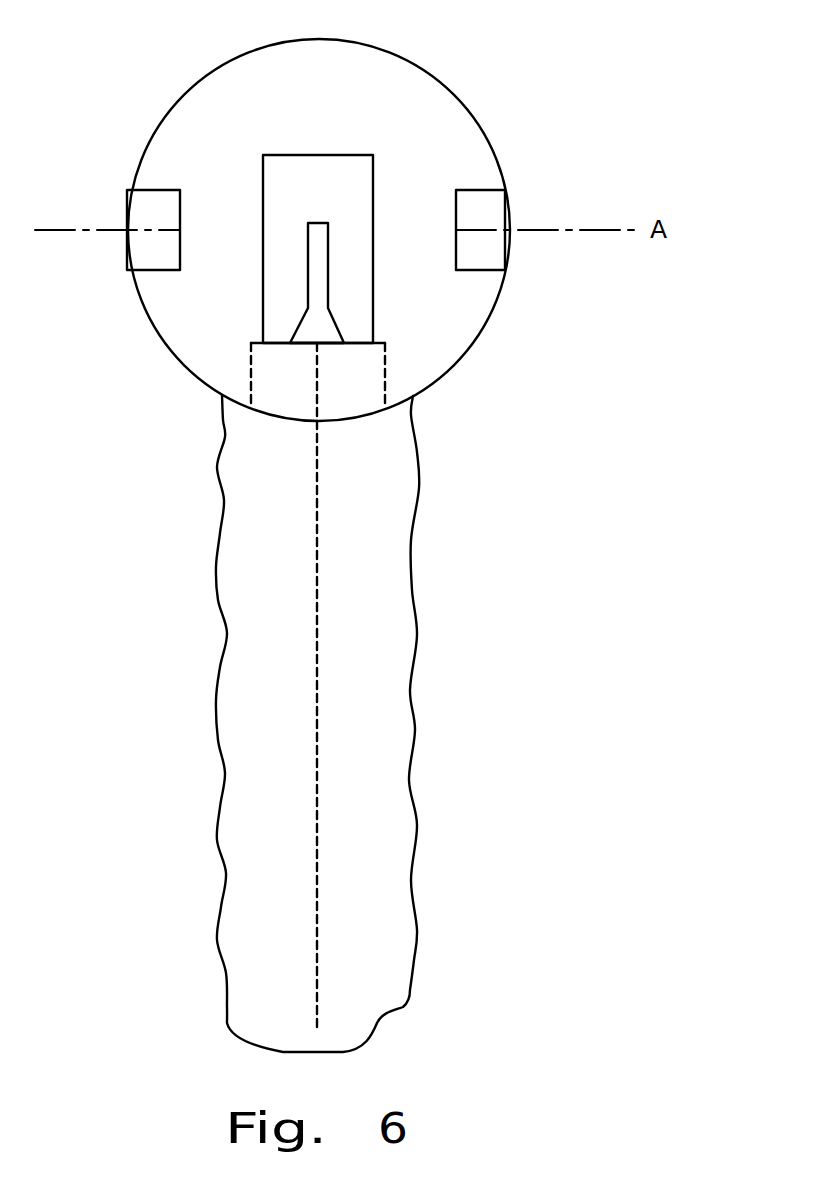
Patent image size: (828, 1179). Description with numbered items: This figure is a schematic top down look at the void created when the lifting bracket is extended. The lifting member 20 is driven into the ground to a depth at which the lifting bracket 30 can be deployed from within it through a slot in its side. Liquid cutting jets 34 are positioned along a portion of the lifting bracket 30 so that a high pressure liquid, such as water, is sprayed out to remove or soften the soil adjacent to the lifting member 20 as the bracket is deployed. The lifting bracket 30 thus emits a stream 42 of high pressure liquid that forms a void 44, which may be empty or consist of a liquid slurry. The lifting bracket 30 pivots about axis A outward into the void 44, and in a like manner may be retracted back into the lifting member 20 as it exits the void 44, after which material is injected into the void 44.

The lifting member 20 is at (443, 83).
The lifting bracket 30 is at (302, 155).
The liquid cutting jets 34 is at (340, 328).
The stream 42 is at (317, 565).
The void 44 is at (387, 747).